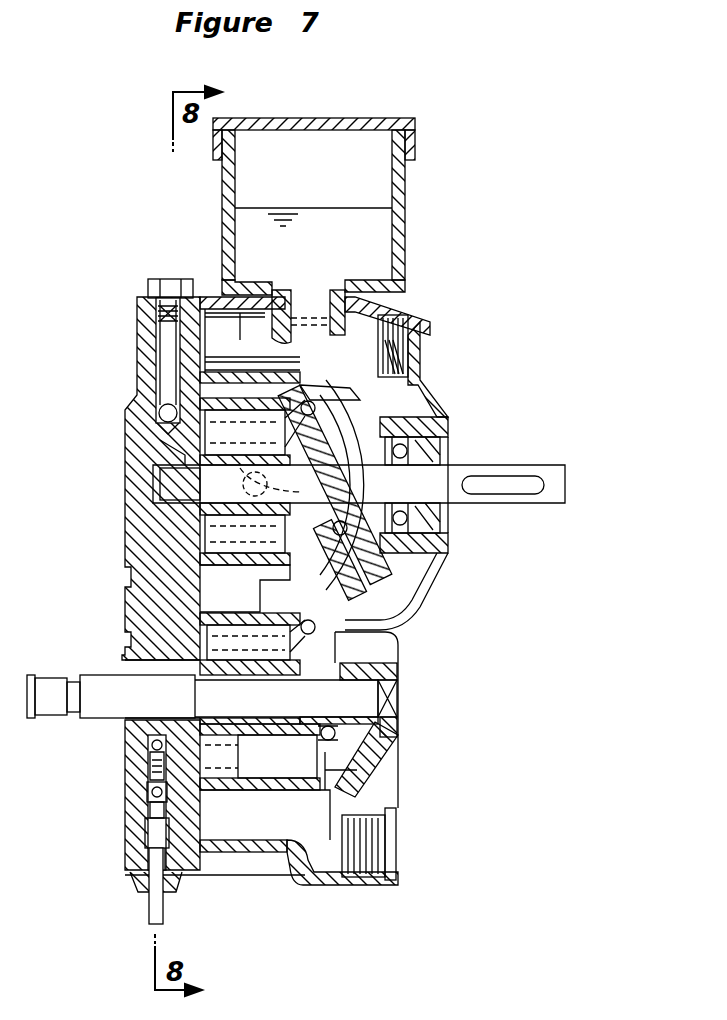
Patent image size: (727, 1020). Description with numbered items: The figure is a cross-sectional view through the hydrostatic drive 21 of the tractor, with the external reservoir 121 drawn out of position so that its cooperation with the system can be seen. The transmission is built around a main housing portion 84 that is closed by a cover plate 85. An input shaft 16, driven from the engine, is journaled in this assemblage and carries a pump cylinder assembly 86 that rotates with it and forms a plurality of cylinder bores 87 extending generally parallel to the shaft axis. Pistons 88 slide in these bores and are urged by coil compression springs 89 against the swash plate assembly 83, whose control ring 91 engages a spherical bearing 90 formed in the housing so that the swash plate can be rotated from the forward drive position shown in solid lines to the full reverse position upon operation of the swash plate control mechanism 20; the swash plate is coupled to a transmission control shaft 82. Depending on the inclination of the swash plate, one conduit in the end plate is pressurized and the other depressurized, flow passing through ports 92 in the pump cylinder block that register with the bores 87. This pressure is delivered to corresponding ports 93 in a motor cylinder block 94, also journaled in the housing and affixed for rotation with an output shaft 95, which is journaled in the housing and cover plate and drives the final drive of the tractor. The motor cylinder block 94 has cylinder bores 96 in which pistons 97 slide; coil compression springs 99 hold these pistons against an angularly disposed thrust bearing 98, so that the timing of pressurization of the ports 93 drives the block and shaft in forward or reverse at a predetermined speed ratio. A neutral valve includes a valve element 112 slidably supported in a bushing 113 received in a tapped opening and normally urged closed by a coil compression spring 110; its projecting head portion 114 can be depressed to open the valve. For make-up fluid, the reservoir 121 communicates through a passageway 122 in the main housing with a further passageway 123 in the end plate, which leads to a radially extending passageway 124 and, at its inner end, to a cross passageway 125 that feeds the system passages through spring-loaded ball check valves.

The input shaft 16 is at (168, 500).
The swash plate control mechanism 20 is at (400, 470).
The hydrostatic drive 21 is at (465, 245).
The transmission control shaft 82 is at (165, 455).
The swash plate assembly 83 is at (435, 522).
The main housing portion 84 is at (458, 430).
The cover plate 85 is at (110, 510).
The pump cylinder assembly 86 is at (200, 588).
The cylinder bores 87 is at (225, 540).
The bearing housing 88 is at (442, 556).
The coil compression springs 89 is at (310, 545).
The spherical bearing 90 is at (375, 418).
The control ring 91 is at (355, 525).
The ports 92 is at (193, 538).
The ports 93 is at (150, 760).
The motor cylinder block 94 is at (194, 760).
The output shaft 95 is at (365, 695).
The cylinder bores 96 is at (230, 757).
The pistons 97 is at (282, 770).
The thrust bearing 98 is at (360, 733).
The coil compression springs 99 is at (236, 785).
The coil compression spring 110 is at (148, 742).
The valve element 112 is at (150, 830).
The bushing 113 is at (130, 888).
The projecting head portion 114 is at (148, 924).
The external reservoir 121 is at (397, 222).
The passageway 122 is at (240, 340).
The passageway 123 is at (185, 310).
The radially extending passageway 124 is at (165, 345).
The cross passageway 125 is at (162, 412).